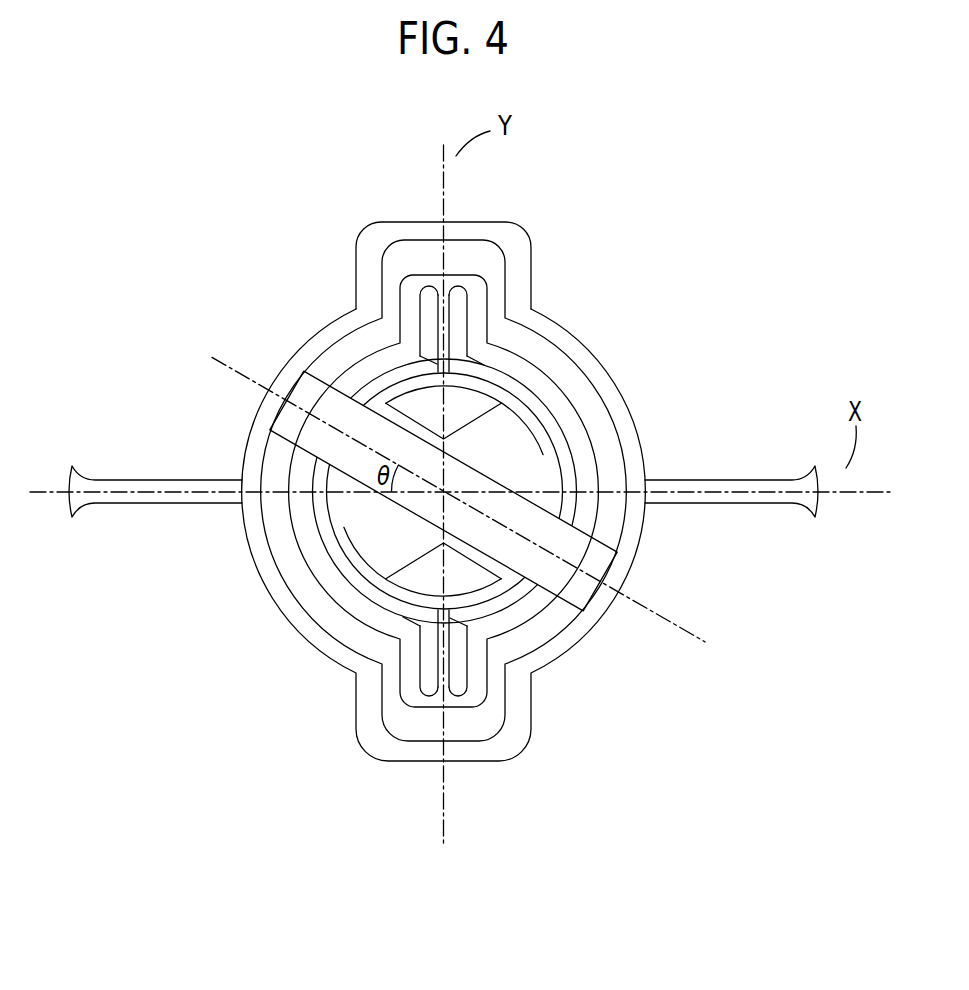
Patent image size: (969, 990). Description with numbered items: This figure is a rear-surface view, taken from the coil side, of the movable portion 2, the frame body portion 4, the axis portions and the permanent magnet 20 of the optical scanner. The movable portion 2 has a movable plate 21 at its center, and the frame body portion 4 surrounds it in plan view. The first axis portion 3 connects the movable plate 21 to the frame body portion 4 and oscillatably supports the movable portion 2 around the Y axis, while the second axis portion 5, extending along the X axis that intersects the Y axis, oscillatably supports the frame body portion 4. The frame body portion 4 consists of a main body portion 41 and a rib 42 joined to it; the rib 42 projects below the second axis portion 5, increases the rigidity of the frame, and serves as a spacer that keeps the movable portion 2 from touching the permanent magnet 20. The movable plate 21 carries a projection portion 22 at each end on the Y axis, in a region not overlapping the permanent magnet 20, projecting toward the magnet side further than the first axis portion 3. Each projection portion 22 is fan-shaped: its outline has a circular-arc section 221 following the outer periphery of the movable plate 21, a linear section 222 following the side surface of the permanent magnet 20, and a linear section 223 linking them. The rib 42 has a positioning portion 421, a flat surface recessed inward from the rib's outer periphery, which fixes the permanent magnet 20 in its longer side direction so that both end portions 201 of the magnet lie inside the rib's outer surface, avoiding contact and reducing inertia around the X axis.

The movable portion 2 is at (538, 406).
The permanent magnet 20 is at (330, 405).
The movable plate 21 is at (360, 527).
The projection portion 22 is at (404, 345).
The section 221 is at (393, 362).
The section 222 is at (612, 537).
The section 223 is at (506, 404).
The first axis portion 3 is at (440, 300).
The frame body portion 4 is at (540, 264).
The main body portion 41 is at (507, 233).
The rib 42 is at (527, 340).
The positioning portion 421 is at (293, 390).
The both end portions 201 is at (250, 398).
The second axis portion 5 is at (164, 479).